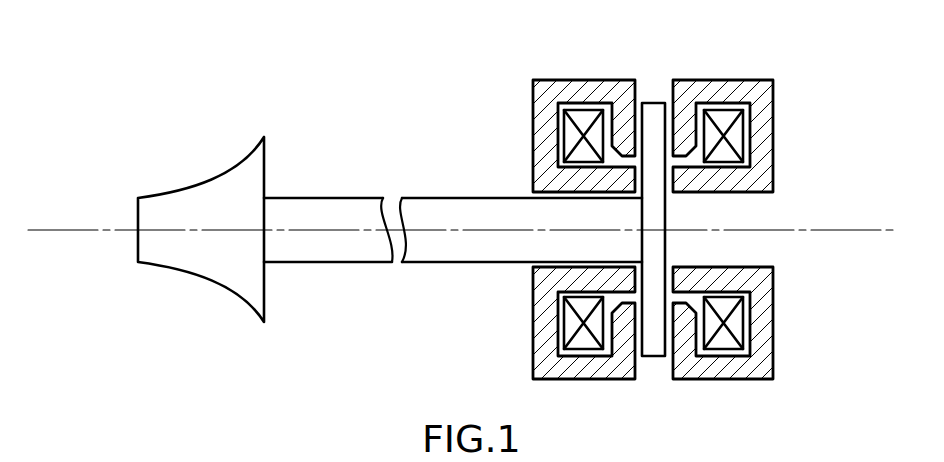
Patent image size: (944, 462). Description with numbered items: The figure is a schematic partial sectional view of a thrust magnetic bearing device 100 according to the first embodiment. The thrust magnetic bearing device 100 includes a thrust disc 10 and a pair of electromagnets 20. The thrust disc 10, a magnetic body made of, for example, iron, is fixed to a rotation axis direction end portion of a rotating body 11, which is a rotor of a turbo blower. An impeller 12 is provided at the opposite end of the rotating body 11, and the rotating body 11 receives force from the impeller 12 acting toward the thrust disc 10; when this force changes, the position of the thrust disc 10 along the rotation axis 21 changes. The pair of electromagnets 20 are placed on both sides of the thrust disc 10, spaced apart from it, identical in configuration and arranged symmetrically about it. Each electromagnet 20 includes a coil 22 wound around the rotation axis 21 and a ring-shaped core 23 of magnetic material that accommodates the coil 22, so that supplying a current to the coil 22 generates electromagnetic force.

The thrust magnetic bearing device 100 is at (431, 61).
The thrust disc 10 is at (656, 103).
The rotating body 11 is at (422, 210).
The impeller 12 is at (168, 205).
The electromagnet 20 is at (572, 80).
The rotation axis 21 is at (868, 232).
The coil 22 is at (580, 137).
The core 23 is at (605, 90).